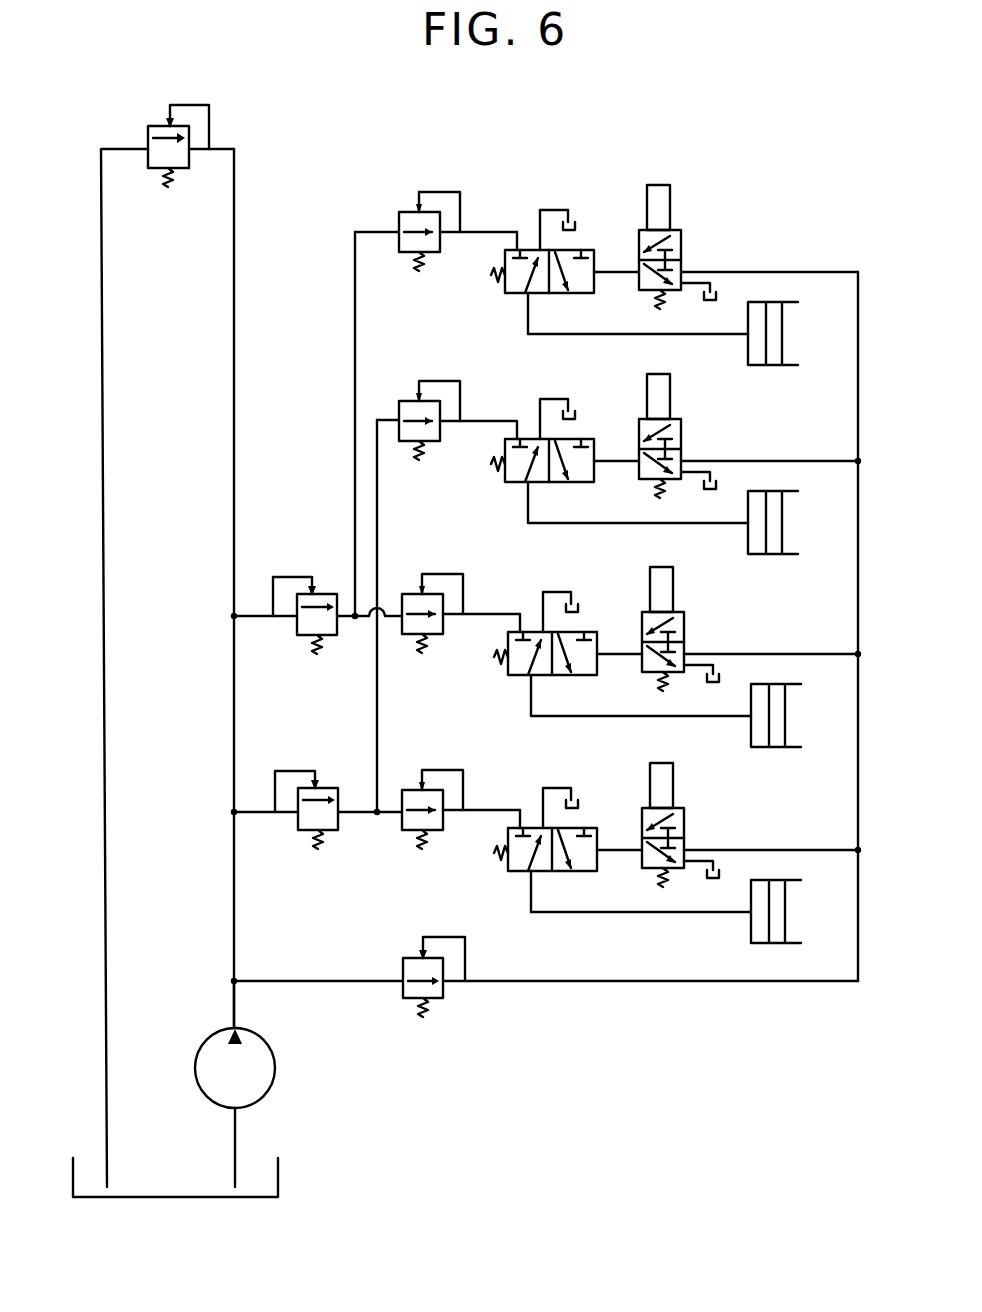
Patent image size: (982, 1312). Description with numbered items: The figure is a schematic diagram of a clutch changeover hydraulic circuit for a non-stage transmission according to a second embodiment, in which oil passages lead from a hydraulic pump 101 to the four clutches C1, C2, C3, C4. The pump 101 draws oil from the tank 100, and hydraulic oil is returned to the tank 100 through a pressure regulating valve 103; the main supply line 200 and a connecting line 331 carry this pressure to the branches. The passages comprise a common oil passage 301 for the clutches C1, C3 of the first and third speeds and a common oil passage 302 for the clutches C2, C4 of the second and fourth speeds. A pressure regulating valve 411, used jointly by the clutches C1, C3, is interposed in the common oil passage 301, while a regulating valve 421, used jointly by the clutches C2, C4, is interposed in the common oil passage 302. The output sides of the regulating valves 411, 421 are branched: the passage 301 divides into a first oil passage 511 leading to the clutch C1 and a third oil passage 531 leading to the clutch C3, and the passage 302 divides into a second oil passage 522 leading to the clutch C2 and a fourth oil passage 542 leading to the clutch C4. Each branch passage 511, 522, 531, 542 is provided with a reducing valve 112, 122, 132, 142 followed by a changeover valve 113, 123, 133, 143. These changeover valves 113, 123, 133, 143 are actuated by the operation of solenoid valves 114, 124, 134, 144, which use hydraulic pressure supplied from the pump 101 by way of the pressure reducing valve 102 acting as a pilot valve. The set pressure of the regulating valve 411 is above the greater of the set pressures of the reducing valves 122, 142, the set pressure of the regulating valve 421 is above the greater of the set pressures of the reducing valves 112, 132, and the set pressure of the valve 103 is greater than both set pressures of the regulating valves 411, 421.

The tank 100 is at (280, 1175).
The hydraulic pump 101 is at (277, 1077).
The pressure reducing valve 102 is at (447, 990).
The pressure regulating valve 103 is at (160, 126).
The main pressure line 200 is at (232, 372).
The common oil passage 301 is at (250, 812).
The common oil passage 302 is at (259, 616).
The connecting line 331 is at (377, 723).
The pressure regulating valve 411 is at (305, 832).
The regulating valve 421 is at (297, 638).
The reducing valve 112 is at (419, 839).
The changeover valve 113 is at (606, 853).
The solenoid valve 114 is at (750, 825).
The reducing valve 122 is at (432, 641).
The changeover valve 123 is at (609, 665).
The solenoid valve 124 is at (750, 629).
The reducing valve 132 is at (418, 441).
The changeover valve 133 is at (600, 471).
The solenoid valve 134 is at (748, 436).
The reducing valve 142 is at (407, 254).
The changeover valve 143 is at (599, 277).
The solenoid valve 144 is at (748, 247).
The first oil passage 511 is at (488, 787).
The second oil passage 522 is at (515, 586).
The third oil passage 531 is at (504, 395).
The fourth oil passage 542 is at (489, 205).
The clutch C1 is at (746, 924).
The clutch C2 is at (776, 741).
The clutch C3 is at (775, 552).
The clutch C4 is at (773, 355).